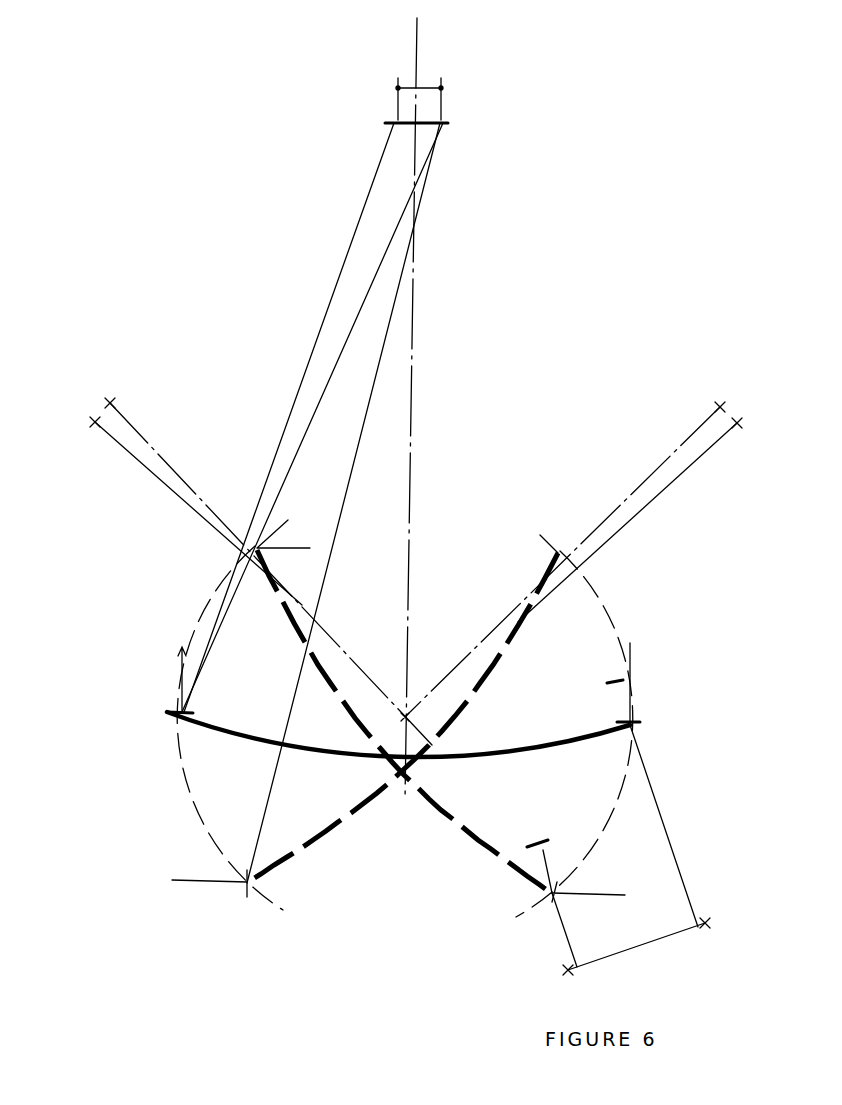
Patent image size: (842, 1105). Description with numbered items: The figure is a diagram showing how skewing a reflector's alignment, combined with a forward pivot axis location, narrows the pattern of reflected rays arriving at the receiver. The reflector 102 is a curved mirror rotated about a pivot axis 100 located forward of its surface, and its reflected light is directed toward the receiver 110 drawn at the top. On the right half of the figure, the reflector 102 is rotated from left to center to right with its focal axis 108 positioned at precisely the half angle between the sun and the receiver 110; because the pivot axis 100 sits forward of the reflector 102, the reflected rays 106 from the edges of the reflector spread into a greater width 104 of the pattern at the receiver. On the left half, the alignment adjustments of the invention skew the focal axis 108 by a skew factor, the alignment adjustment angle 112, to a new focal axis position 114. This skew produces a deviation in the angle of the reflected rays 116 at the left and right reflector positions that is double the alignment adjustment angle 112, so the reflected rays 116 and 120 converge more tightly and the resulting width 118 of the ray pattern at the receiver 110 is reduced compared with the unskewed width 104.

The pivot axis 100 is at (408, 703).
The reflector 102 is at (210, 713).
The width of the pattern of reflected rays 104 is at (633, 937).
The reflected rays 106 is at (614, 703).
The focal axis 108 is at (420, 381).
The receiver 110 is at (452, 127).
The alignment adjustment angle 112 is at (91, 412).
The focal axis position 114 is at (132, 469).
The reflected rays 116 is at (310, 342).
The width of the pattern of reflected rays 118 is at (422, 77).
The reflected rays 120 is at (332, 393).